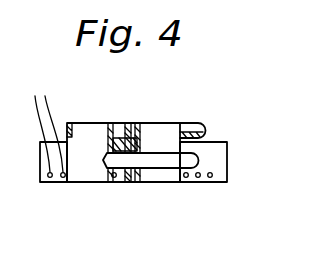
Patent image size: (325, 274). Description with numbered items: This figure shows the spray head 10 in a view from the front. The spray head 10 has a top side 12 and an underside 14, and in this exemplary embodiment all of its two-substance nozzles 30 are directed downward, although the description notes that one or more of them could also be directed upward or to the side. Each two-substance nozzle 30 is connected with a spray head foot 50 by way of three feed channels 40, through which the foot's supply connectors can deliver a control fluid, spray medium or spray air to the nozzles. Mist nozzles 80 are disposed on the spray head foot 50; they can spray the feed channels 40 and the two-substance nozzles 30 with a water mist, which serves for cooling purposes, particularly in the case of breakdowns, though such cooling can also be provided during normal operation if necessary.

The spray head 10 is at (241, 101).
The top side 12 is at (128, 107).
The underside 14 is at (131, 227).
The two-substance nozzles 30 is at (95, 183).
The feed channels 40 is at (186, 156).
The spray head foot 50 is at (43, 184).
The mist nozzles 80 is at (43, 125).